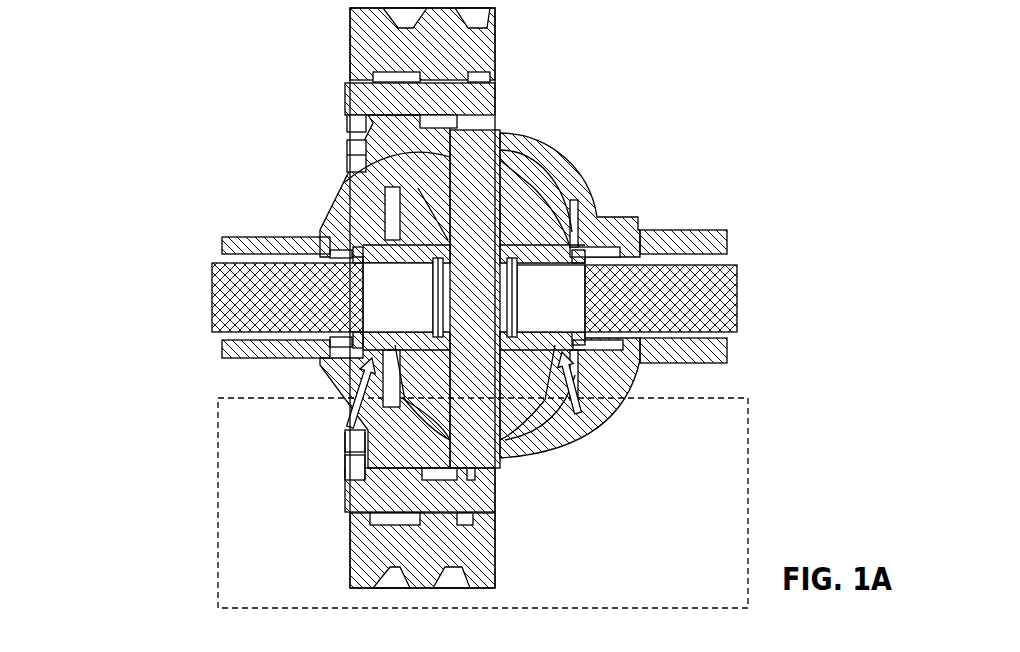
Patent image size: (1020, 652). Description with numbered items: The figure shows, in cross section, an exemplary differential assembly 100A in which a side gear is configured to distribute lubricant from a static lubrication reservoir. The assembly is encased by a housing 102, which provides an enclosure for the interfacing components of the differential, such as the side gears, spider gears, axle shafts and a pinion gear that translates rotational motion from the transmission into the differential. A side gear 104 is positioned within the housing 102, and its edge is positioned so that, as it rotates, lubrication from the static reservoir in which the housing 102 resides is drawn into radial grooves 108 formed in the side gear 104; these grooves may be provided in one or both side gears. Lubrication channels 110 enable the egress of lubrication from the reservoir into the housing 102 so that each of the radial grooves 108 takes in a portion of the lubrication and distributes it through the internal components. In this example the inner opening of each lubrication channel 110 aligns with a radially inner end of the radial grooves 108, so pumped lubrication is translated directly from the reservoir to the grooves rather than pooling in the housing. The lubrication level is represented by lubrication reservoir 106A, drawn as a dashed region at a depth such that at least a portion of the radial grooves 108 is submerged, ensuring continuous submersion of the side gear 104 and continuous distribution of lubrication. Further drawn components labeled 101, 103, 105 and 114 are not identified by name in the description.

The differential assembly 100A is at (172, 88).
The differential case / ring gear 101 is at (358, 38).
The housing 102 is at (582, 208).
The cross pin 103 is at (478, 147).
The side gear 104 is at (413, 188).
The pinion gear 105 is at (515, 178).
The lubrication reservoir 106A is at (218, 440).
The radial grooves 108 is at (400, 258).
The lubrication channels 110 is at (343, 413).
The axle tube 114 is at (235, 265).